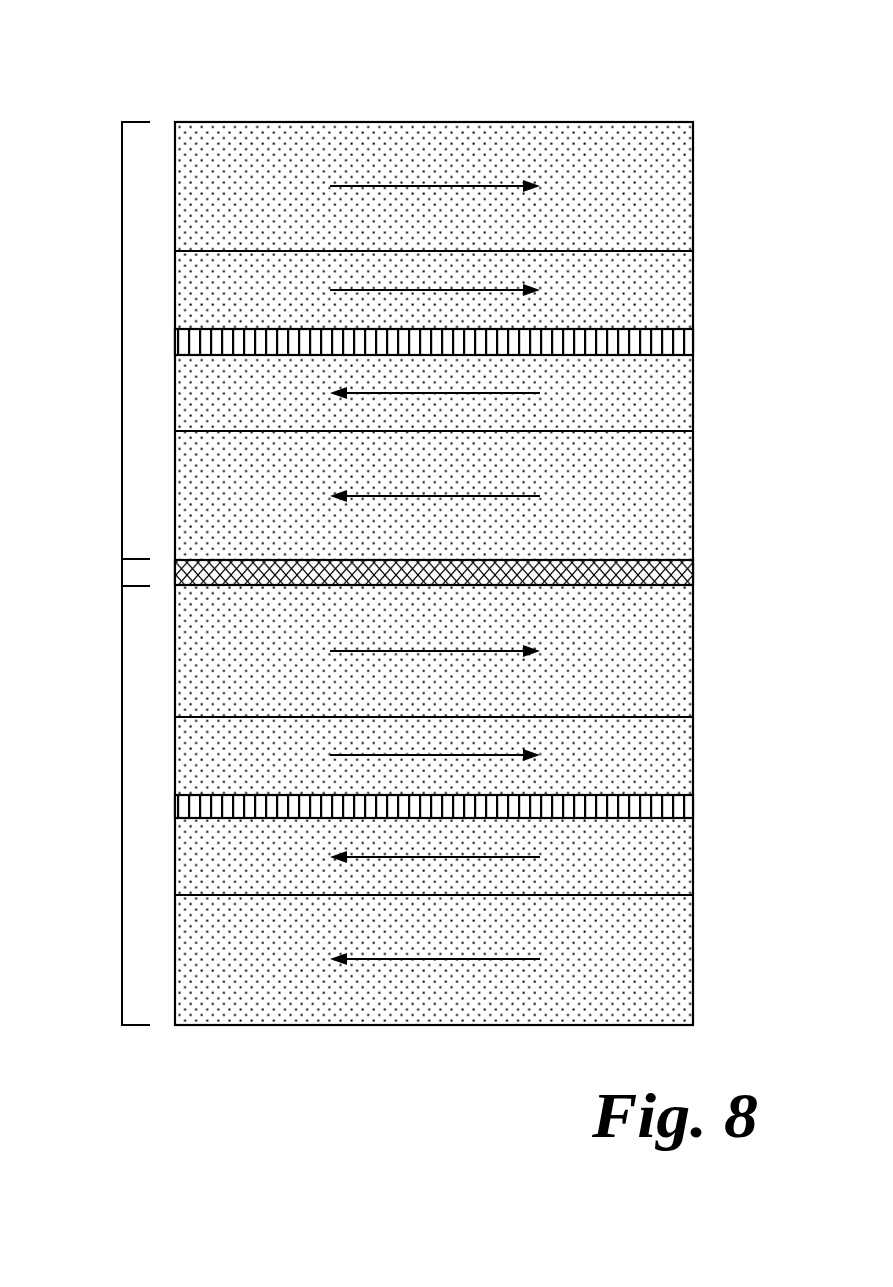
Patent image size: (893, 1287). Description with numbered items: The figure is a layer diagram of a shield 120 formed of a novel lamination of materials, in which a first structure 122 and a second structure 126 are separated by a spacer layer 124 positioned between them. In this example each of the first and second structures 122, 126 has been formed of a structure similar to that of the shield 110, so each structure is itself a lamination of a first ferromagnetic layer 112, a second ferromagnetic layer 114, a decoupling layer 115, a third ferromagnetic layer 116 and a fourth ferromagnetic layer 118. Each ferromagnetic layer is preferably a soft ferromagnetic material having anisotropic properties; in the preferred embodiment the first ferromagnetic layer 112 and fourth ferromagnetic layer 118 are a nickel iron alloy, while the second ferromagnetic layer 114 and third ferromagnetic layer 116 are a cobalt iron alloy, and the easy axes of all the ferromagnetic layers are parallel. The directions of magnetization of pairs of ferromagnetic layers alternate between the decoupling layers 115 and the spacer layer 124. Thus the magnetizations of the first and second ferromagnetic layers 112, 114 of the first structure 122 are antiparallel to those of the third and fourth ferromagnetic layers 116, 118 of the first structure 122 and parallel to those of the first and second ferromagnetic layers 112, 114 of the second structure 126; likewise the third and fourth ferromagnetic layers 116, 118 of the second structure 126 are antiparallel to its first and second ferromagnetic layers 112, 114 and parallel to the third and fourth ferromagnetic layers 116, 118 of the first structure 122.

The shield 110 is at (80, 573).
The first ferromagnetic layer 112 is at (668, 186).
The second ferromagnetic layer 114 is at (668, 290).
The decoupling layer 115 is at (693, 342).
The third ferromagnetic layer 116 is at (668, 393).
The fourth ferromagnetic layer 118 is at (668, 496).
The shield 120 is at (423, 512).
The first structure 122 is at (122, 342).
The spacer layer 124 is at (690, 572).
The second structure 126 is at (122, 805).